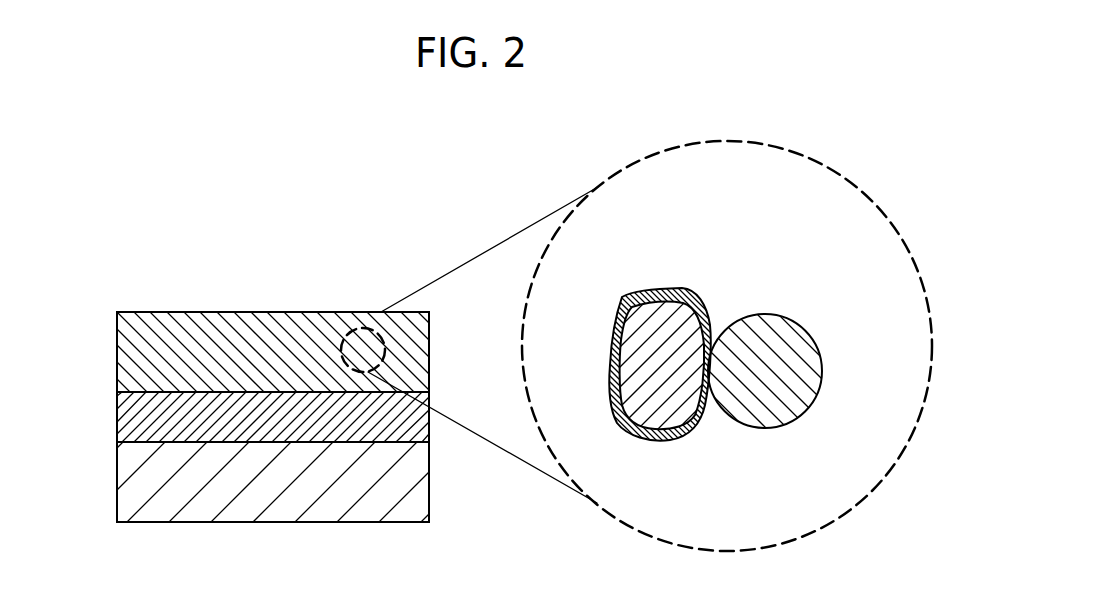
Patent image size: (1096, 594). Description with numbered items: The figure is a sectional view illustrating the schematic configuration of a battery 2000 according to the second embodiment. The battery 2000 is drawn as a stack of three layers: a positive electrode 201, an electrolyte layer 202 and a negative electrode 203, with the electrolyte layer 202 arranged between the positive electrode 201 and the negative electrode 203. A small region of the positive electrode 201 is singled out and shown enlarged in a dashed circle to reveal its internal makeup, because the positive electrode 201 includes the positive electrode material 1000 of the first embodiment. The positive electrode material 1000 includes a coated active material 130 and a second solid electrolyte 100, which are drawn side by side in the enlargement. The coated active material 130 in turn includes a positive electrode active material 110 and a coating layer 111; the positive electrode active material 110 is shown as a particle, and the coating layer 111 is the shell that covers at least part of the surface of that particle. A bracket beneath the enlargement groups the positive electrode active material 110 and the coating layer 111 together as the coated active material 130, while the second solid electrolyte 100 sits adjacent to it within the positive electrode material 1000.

The battery 2000 is at (300, 253).
The positive electrode 201 is at (158, 345).
The electrolyte layer 202 is at (158, 420).
The negative electrode 203 is at (158, 485).
The positive electrode material 1000 is at (743, 252).
The second solid electrolyte 100 is at (793, 343).
The coated active material 130 is at (671, 412).
The positive electrode active material 110 is at (683, 397).
The coating layer 111 is at (655, 440).